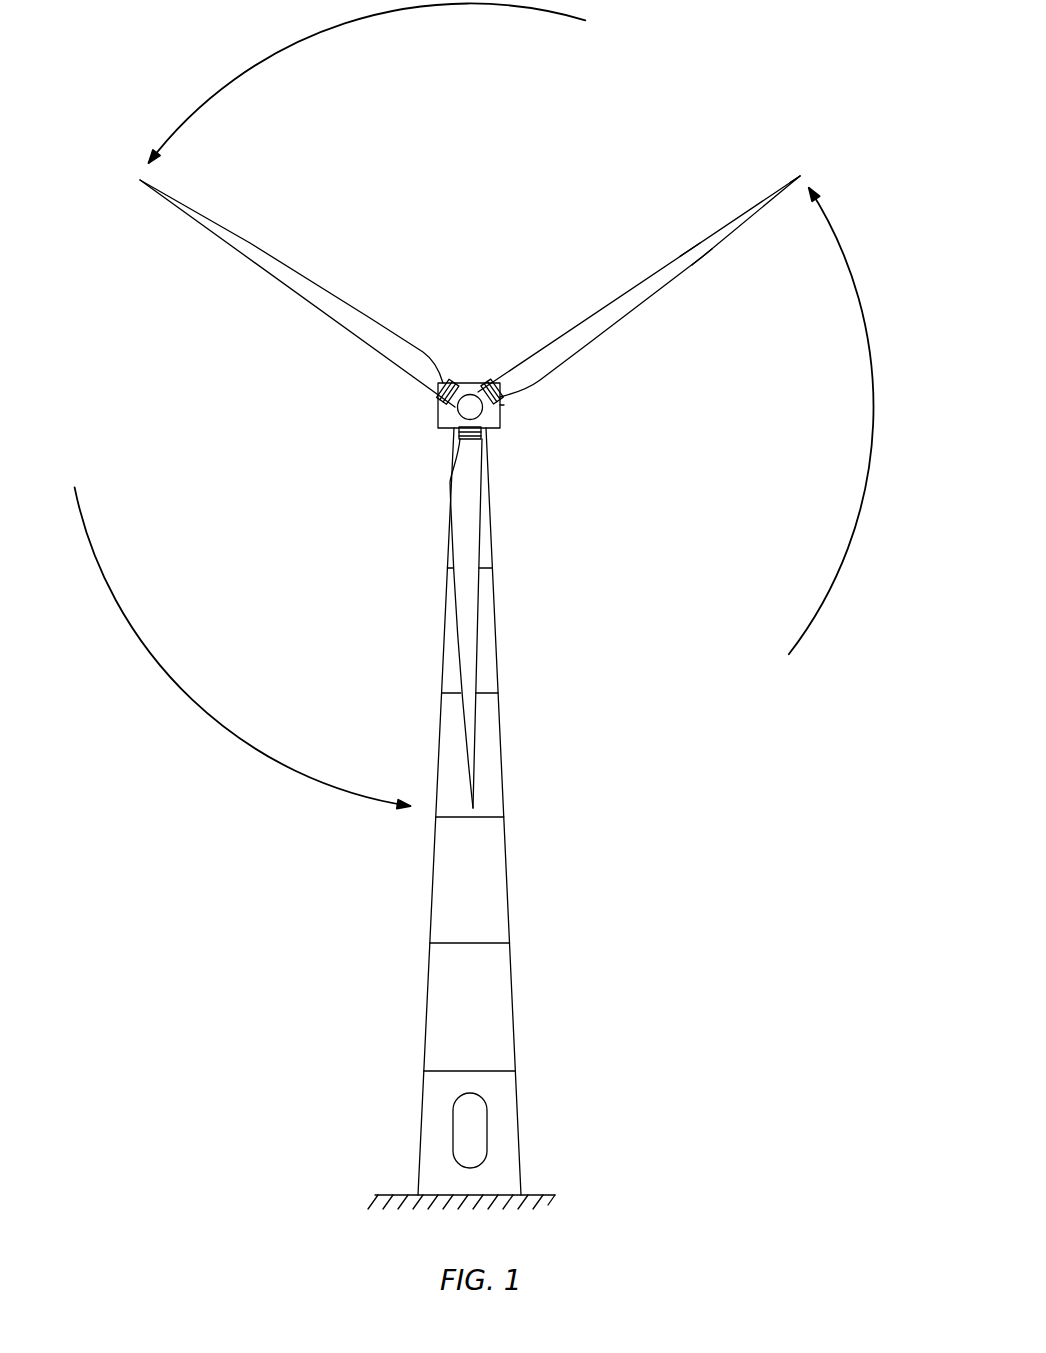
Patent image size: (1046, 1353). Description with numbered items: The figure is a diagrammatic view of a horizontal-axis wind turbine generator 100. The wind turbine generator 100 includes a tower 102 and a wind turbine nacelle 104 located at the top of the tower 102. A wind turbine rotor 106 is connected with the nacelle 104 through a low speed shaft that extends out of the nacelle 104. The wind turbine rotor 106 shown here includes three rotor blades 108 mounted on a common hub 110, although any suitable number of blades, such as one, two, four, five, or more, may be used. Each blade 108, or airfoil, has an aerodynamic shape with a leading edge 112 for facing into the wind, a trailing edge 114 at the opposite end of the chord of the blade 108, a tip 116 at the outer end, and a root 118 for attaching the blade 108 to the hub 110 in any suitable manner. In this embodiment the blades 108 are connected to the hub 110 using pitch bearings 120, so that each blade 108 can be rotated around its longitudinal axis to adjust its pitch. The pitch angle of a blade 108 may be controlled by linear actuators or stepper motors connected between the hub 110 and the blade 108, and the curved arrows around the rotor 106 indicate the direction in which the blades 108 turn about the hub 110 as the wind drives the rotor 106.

The wind turbine generator 100 is at (411, 1024).
The tower 102 is at (500, 893).
The wind turbine nacelle 104 is at (502, 423).
The wind turbine rotor 106 is at (411, 394).
The rotor blade 108 is at (227, 228).
The hub 110 is at (470, 404).
The leading edge 112 is at (690, 249).
The trailing edge 114 is at (703, 258).
The tip 116 is at (803, 169).
The root 118 is at (507, 403).
The pitch bearing 120 is at (481, 386).